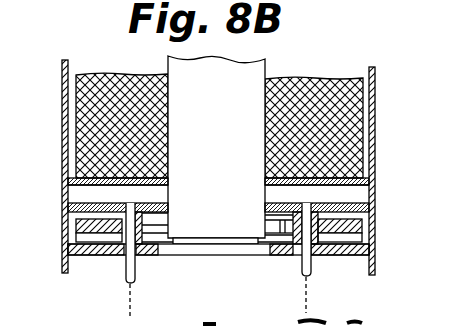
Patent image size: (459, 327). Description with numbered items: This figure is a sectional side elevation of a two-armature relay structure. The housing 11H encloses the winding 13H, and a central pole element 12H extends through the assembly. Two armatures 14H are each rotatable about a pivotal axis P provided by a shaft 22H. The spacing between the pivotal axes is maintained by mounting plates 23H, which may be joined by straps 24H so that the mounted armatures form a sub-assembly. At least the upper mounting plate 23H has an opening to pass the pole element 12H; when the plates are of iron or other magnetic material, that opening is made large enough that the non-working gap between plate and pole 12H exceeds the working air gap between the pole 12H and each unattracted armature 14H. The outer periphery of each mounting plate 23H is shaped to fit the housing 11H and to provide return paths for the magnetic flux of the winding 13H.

The housing 11H is at (62, 128).
The pole element 12H is at (252, 75).
The winding 13H is at (122, 75).
The armature 14H is at (97, 233).
The shaft 22H is at (136, 274).
The mounting plate 23H is at (376, 203).
The strap 24H is at (227, 240).
The pivotal axis P is at (130, 300).